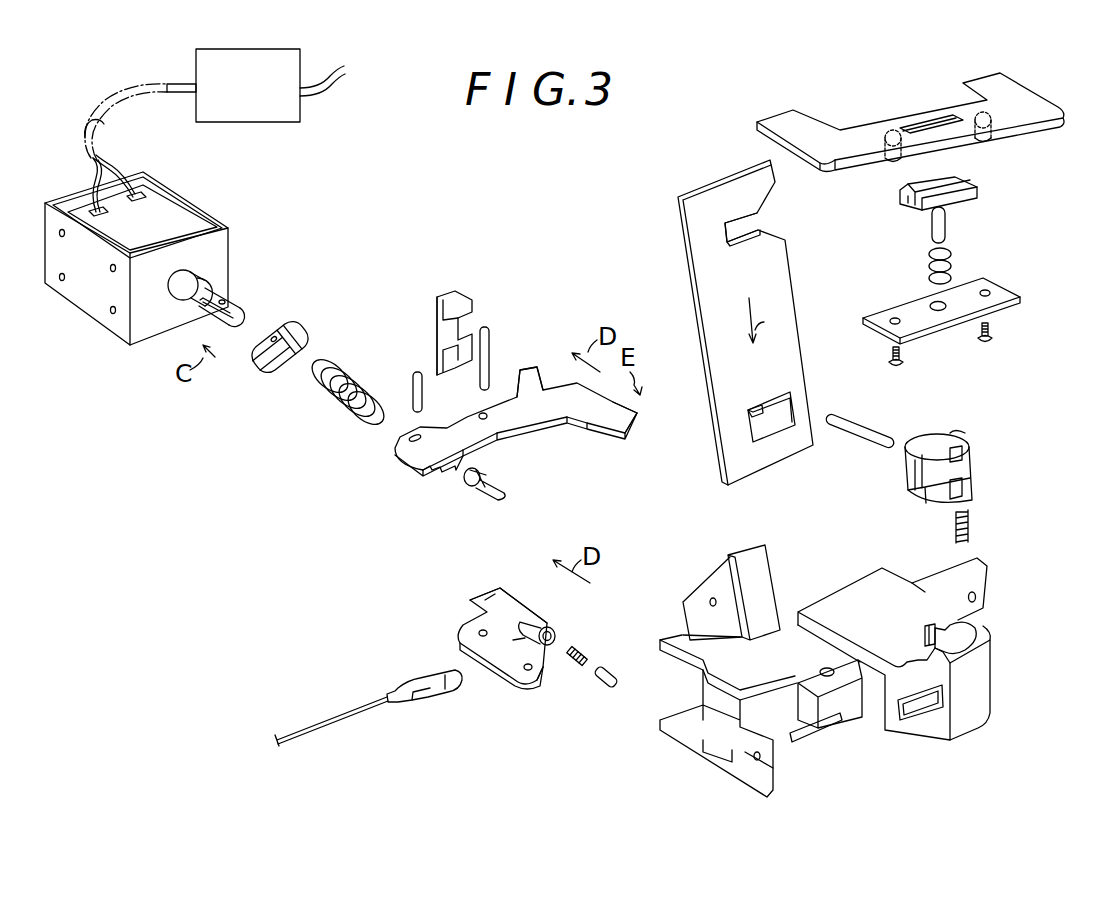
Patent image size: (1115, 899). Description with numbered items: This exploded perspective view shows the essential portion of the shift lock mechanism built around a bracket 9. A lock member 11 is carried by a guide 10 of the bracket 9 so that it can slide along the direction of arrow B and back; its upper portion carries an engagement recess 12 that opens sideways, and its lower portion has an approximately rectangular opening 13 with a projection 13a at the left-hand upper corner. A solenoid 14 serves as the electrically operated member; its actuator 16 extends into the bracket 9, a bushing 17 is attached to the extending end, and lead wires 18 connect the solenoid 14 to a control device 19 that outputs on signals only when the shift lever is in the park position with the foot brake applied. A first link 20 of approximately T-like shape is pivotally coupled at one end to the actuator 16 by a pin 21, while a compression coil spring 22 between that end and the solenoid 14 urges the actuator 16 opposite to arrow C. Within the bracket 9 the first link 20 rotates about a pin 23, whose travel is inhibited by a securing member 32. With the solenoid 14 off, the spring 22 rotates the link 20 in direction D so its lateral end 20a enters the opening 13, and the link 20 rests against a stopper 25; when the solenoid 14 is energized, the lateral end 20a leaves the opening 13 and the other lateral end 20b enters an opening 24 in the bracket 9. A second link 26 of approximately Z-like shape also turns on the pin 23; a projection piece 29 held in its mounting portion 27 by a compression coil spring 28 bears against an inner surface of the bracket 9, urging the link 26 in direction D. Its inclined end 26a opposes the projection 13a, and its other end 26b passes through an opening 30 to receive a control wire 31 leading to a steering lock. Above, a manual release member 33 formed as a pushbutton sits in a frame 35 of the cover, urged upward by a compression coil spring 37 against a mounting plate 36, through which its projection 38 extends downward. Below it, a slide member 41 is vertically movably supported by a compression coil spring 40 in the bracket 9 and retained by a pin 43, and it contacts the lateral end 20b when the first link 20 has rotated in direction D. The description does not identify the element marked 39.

The bracket 9 is at (992, 672).
The guide 10 is at (730, 548).
The lock member 11 is at (692, 315).
The engagement recess 12 is at (757, 228).
The rectangular opening 13 is at (795, 410).
The projection 13a is at (750, 408).
The solenoid 14 is at (228, 228).
The actuator 16 is at (242, 302).
The bushing 17 is at (290, 326).
The lead wires 18 is at (110, 180).
The control device 19 is at (248, 122).
The first link 20 is at (534, 424).
The lateral end 20a is at (532, 370).
The lateral end 20b is at (640, 413).
The pin 21 is at (413, 385).
The compression coil spring 22 is at (333, 407).
The pin 23 is at (490, 345).
The opening 24 is at (920, 716).
The stopper 25 is at (474, 488).
The second link 26 is at (462, 630).
The one end 26a is at (500, 590).
The other end 26b is at (538, 684).
The mounting portion 27 is at (556, 632).
The compression coil spring 28 is at (588, 656).
The projection piece 29 is at (618, 678).
The opening 30 is at (812, 746).
The control wire 31 is at (358, 713).
The securing member 32 is at (458, 300).
The manual release member 33 is at (970, 182).
The frame 35 is at (1065, 105).
The mounting plate 36 is at (1010, 293).
The compression coil spring 37 is at (952, 262).
The projection 38 is at (950, 230).
The recess 39 is at (966, 628).
The compression coil spring 40 is at (970, 525).
The slide member 41 is at (978, 472).
The pin 43 is at (870, 425).